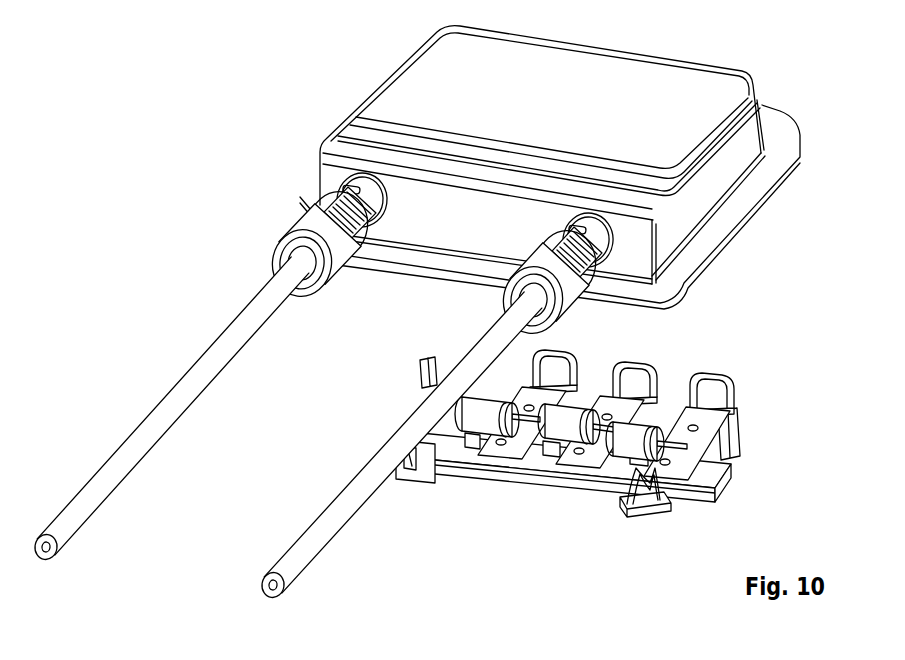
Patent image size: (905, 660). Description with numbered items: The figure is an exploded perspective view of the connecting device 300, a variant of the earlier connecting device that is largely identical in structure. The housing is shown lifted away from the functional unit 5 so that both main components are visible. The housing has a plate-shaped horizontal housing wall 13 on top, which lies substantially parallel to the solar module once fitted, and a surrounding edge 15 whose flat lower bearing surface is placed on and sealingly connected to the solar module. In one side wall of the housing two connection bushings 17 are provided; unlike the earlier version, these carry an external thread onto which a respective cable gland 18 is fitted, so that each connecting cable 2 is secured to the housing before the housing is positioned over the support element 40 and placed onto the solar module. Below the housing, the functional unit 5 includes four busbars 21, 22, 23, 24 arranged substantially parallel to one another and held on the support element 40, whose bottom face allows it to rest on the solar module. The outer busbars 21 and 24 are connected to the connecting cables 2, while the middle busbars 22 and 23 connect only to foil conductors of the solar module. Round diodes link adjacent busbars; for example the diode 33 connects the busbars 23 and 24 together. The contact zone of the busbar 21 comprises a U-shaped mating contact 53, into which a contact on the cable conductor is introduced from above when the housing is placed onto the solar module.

The connecting device 300 is at (250, 88).
The horizontal housing wall 13 is at (683, 78).
The edge 15 is at (734, 208).
The connection bushings 17 is at (373, 197).
The cable gland 18 is at (340, 237).
The connecting cable 2 is at (177, 398).
The functional unit 5 is at (761, 343).
The busbar 21 is at (446, 434).
The second busbar 22 is at (552, 397).
The third busbar 23 is at (623, 410).
The fourth busbar 24 is at (700, 420).
The support element 40 is at (553, 420).
The diode 33 is at (628, 442).
The mating contact 53 is at (657, 487).